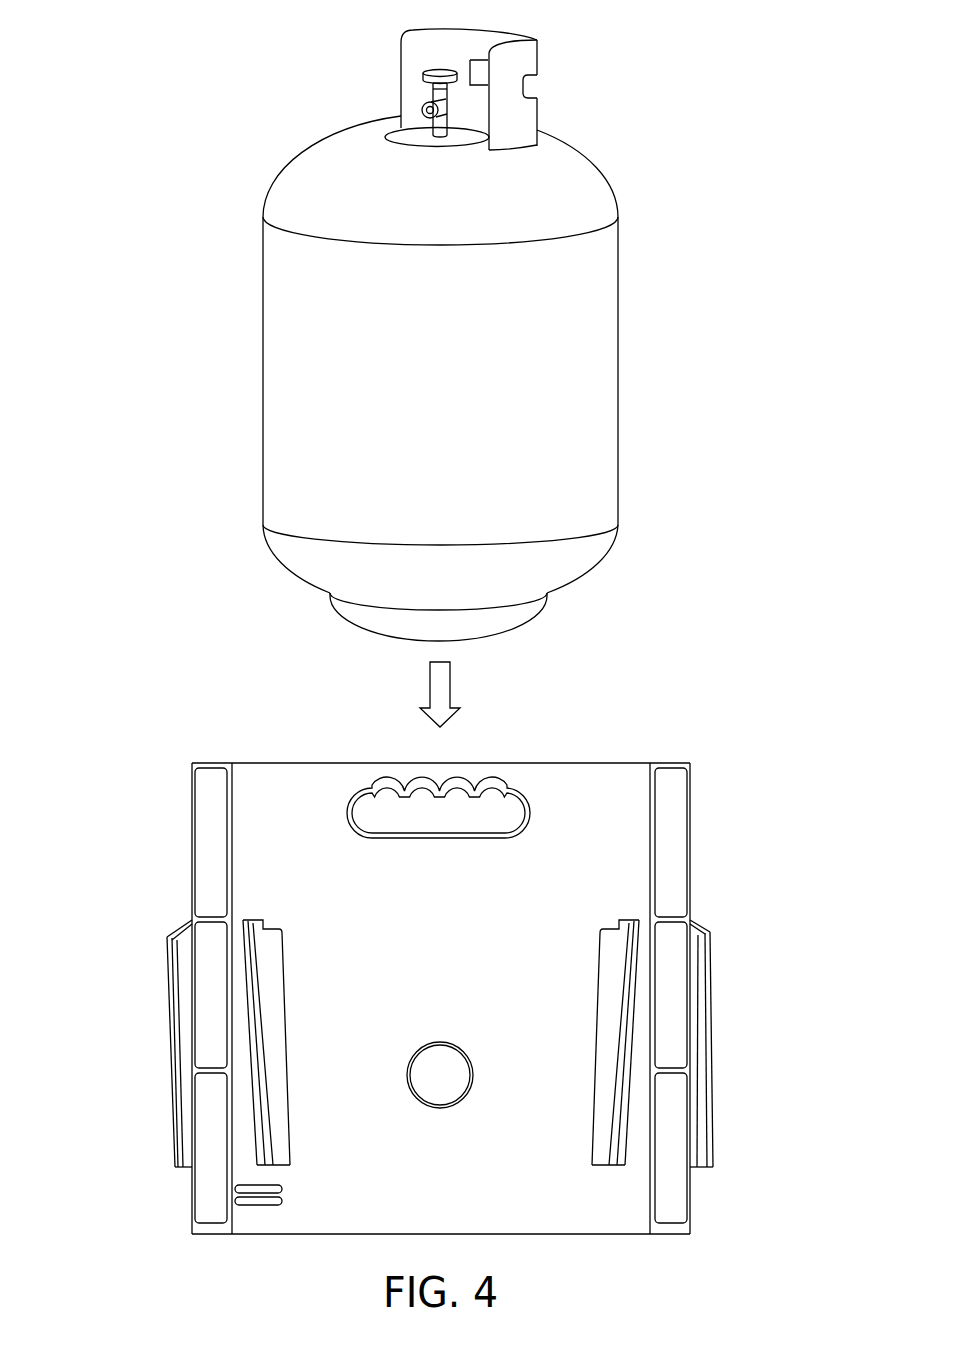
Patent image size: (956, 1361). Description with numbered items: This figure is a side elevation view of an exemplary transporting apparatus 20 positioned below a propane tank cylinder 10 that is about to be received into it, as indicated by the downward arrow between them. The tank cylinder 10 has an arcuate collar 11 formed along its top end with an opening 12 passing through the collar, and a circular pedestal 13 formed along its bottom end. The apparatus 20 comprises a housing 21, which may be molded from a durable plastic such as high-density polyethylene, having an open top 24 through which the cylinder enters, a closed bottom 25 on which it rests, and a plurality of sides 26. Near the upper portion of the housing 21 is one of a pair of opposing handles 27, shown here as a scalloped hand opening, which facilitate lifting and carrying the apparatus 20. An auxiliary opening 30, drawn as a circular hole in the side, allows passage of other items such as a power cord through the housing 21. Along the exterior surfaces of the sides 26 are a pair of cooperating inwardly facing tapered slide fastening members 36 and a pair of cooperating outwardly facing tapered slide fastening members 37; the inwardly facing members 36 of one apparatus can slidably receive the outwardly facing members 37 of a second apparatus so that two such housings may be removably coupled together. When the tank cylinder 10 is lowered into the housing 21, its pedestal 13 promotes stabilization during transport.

The propane tank cylinder 10 is at (243, 315).
The arcuate collar 11 is at (528, 60).
The opening 12 is at (525, 92).
The circular pedestal 13 is at (517, 612).
The transporting apparatus 20 is at (179, 696).
The housing 21 is at (172, 859).
The open top 24 is at (285, 762).
The closed bottom 25 is at (270, 1236).
The sides 26 is at (192, 800).
The handles 27 is at (458, 828).
The auxiliary opening 30 is at (438, 1104).
The inwardly facing tapered slide fastening members 36 is at (270, 963).
The outwardly facing tapered slide fastening members 37 is at (170, 1003).